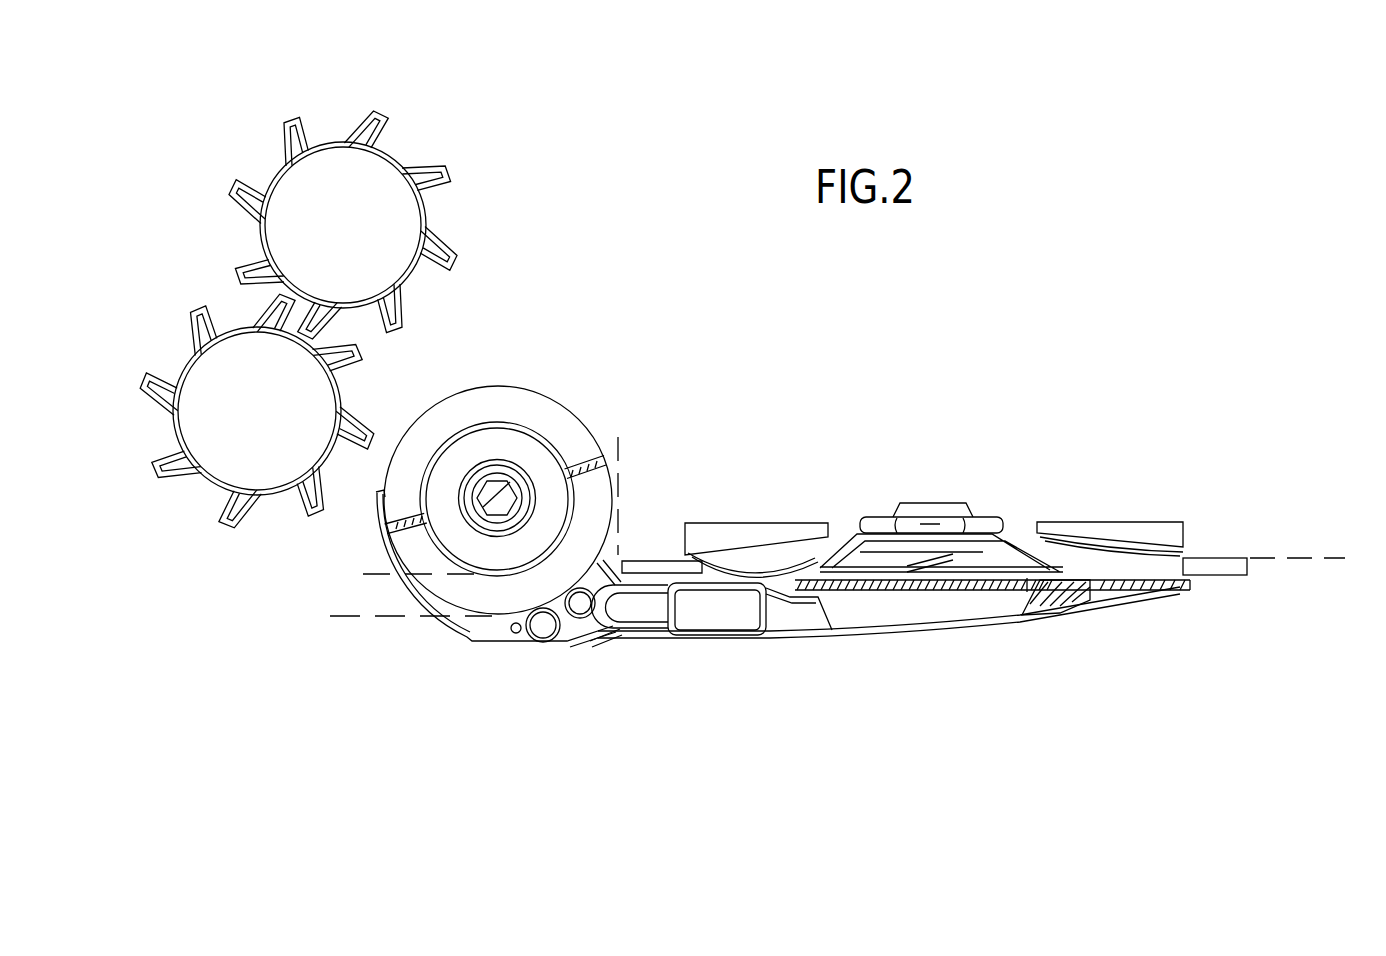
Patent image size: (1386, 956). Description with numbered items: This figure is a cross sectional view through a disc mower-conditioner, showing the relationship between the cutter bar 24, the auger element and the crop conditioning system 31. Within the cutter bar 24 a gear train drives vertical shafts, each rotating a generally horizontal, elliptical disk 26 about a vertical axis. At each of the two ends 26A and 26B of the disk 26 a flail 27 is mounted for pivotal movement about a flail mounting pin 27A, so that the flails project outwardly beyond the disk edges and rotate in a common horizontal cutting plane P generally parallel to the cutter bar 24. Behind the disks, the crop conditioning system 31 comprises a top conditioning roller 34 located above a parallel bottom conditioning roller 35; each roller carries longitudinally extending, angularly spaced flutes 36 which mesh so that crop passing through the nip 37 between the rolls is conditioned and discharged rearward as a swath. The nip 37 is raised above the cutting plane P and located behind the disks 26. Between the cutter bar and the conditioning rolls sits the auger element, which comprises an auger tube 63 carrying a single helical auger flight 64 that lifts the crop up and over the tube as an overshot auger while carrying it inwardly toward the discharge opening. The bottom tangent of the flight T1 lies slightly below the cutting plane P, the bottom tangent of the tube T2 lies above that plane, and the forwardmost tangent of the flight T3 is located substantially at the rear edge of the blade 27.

The cutter bar 24 is at (941, 470).
The disk 26 is at (851, 532).
The end of disk 26A is at (708, 524).
The end of disk 26B is at (1168, 516).
The flail 27 is at (1218, 565).
The flail mounting pin 27A is at (1175, 585).
The crop conditioning system 31 is at (494, 271).
The top conditioning roller 34 is at (410, 215).
The bottom conditioning roller 35 is at (314, 403).
The flutes 36 is at (383, 118).
The nip 37 is at (354, 328).
The auger tube 63 is at (496, 422).
The auger flight 64 is at (412, 473).
The tangent at the bottom of the flight T1 is at (330, 616).
The bottom tangent of the tube T2 is at (366, 574).
The forwardmost tangent of the flight T3 is at (620, 438).
The cutting plane P is at (1302, 547).